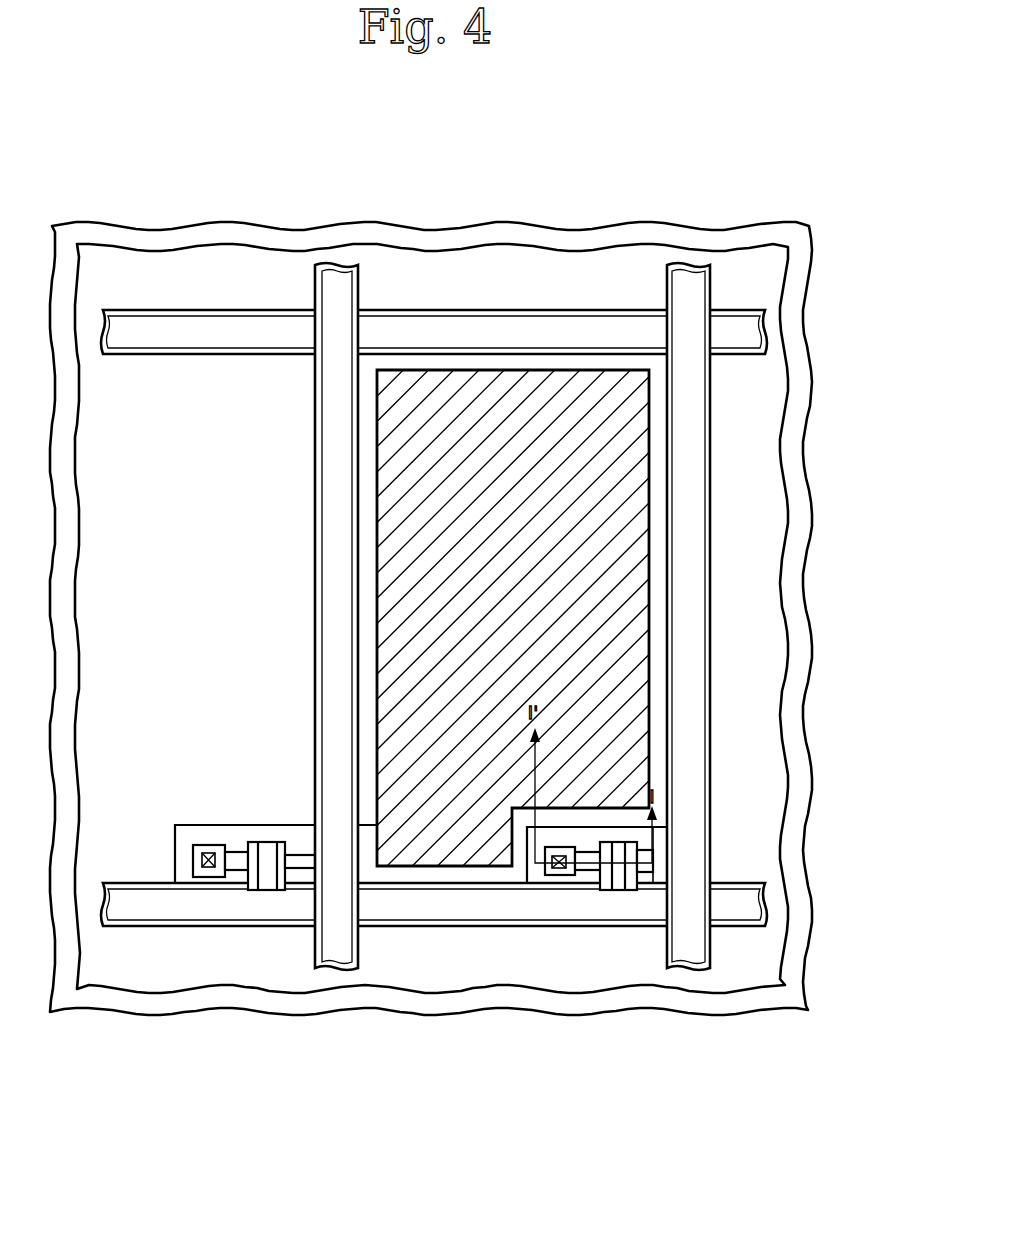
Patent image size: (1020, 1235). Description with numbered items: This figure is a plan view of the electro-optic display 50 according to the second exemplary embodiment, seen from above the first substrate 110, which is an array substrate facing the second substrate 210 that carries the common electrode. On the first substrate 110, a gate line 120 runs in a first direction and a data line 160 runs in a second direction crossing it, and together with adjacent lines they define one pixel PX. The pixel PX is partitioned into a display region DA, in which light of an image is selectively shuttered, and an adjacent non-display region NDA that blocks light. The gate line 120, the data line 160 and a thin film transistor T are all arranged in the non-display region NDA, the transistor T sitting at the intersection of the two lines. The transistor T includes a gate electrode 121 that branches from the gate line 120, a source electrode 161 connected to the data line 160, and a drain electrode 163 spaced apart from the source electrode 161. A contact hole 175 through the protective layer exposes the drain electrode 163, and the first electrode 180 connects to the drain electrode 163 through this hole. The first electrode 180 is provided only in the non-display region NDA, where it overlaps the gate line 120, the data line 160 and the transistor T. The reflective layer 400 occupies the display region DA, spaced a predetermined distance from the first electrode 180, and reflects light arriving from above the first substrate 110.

The electro-optic display 50 is at (798, 163).
The first substrate 110 is at (812, 460).
The second substrate 210 is at (787, 598).
The reflective layer 400 is at (492, 370).
The gate line 120 is at (747, 905).
The gate electrode 121 is at (618, 845).
The data line 160 is at (688, 963).
The source electrode 161 is at (652, 885).
The drain electrode 163 is at (593, 885).
The contact hole 175 is at (556, 856).
The first electrode 180 is at (667, 590).
The thin film transistor T is at (600, 836).
The pixel PX is at (542, 172).
The display region DA is at (593, 360).
The non-display region NDA is at (693, 373).